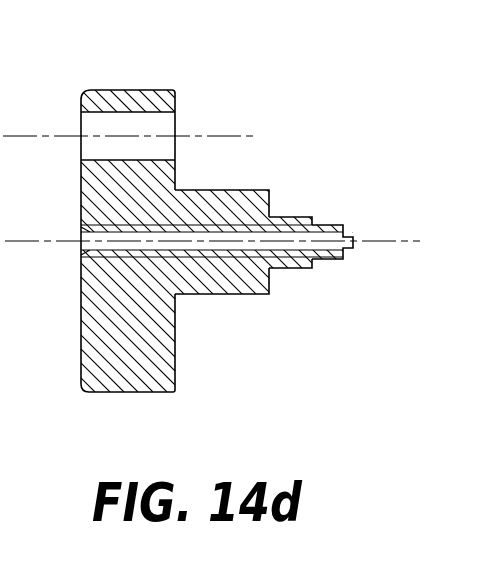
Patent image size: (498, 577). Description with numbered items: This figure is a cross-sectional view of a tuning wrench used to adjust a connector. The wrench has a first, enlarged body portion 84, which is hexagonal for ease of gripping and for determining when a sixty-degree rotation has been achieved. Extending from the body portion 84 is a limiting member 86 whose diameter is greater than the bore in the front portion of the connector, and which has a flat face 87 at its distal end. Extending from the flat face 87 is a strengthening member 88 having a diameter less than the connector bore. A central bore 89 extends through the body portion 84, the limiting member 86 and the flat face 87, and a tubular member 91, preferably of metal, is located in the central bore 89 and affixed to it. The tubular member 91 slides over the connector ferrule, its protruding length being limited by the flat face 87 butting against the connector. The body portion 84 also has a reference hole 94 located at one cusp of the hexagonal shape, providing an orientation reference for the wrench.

The body portion 84 is at (174, 90).
The limiting member 86 is at (252, 189).
The flat face 87 is at (271, 201).
The strengthening member 88 is at (292, 269).
The central bore 89 is at (80, 237).
The tubular member 91 is at (323, 224).
The reference hole 94 is at (96, 112).